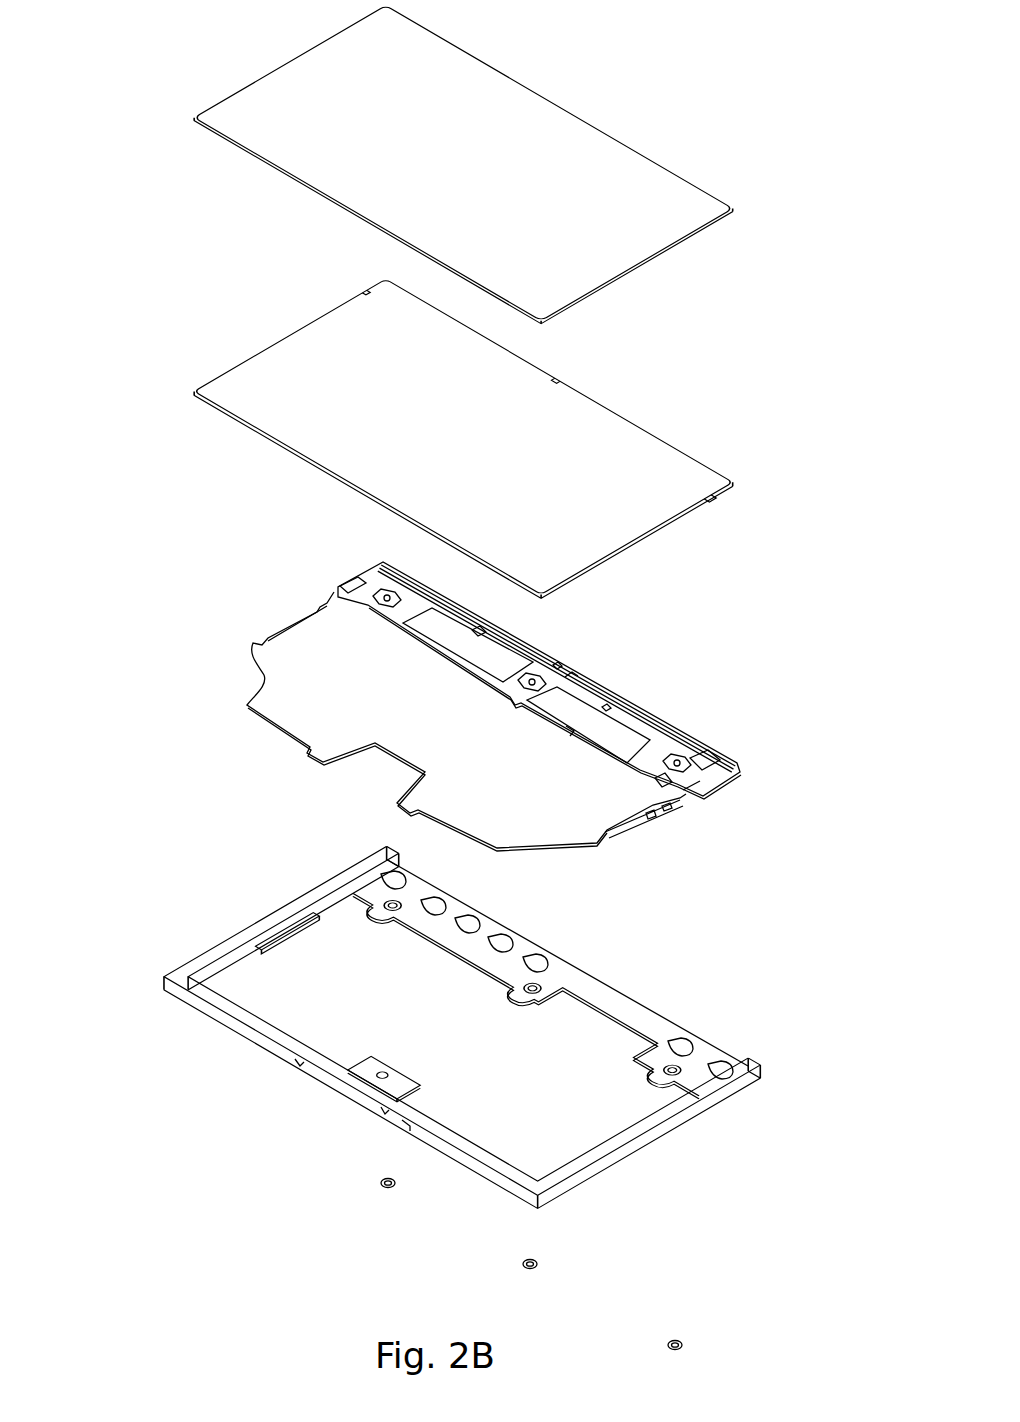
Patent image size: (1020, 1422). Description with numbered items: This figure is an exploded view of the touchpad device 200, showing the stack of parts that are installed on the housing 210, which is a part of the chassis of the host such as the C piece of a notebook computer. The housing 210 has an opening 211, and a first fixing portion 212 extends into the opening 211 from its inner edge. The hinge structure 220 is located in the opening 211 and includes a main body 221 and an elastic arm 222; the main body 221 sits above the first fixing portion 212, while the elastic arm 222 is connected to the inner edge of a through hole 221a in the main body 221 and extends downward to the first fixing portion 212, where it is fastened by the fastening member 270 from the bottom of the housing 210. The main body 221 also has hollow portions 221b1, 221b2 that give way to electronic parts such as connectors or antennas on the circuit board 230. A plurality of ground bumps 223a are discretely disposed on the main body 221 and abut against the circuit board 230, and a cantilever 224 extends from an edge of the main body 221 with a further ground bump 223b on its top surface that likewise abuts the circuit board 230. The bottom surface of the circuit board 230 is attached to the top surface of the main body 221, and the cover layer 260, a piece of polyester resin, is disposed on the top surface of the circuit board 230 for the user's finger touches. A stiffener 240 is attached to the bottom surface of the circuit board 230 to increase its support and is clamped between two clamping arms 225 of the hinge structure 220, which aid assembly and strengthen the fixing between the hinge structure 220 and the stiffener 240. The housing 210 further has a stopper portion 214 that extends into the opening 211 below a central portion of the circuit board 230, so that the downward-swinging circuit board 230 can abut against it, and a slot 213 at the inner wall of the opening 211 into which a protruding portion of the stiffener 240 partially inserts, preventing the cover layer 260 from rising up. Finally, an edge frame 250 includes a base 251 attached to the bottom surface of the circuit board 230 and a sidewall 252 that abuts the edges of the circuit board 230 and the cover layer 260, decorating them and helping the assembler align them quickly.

The touchpad device 200 is at (90, 26).
The housing 210 is at (447, 1016).
The opening 211 is at (238, 947).
The first fixing portion 212 is at (392, 897).
The slot 213 is at (311, 1068).
The stopper portion 214 is at (386, 1072).
The hinge structure 220 is at (499, 672).
The main body 221 is at (735, 747).
The through hole 221a is at (666, 756).
The hollow portion 221b1 is at (574, 705).
The hollow portion 221b2 is at (498, 658).
The elastic arm 222 is at (703, 758).
The ground bumps 223a is at (570, 731).
The ground bump 223b is at (667, 790).
The cantilever 224 is at (706, 781).
The clamping arms 225 is at (690, 793).
The circuit board 230 is at (625, 438).
The stiffener 240 is at (406, 758).
The edge frame 250 is at (450, 618).
The base 251 is at (375, 574).
The sidewall 252 is at (380, 560).
The cover layer 260 is at (608, 165).
The fastening member 270 is at (676, 1339).